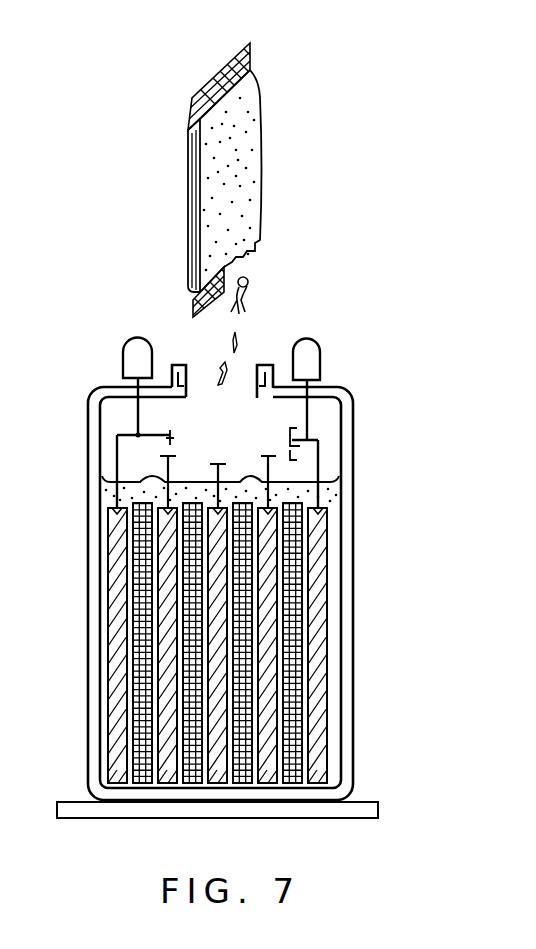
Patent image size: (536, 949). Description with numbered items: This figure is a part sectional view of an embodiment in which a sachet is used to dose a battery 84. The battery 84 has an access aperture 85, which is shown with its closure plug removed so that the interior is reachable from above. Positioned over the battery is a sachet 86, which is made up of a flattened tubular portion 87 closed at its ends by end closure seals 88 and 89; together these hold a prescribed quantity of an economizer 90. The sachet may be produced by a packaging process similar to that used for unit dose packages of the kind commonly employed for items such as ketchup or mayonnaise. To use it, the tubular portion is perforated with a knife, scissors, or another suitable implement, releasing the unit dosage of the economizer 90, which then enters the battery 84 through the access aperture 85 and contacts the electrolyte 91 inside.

The battery 84 is at (270, 549).
The access aperture 85 is at (242, 375).
The sachet 86 is at (240, 160).
The flattened tubular portion 87 is at (255, 208).
The end closure seal 88 is at (252, 52).
The end closure seal 89 is at (193, 302).
The economizer 90 is at (250, 290).
The electrolyte 91 is at (333, 512).